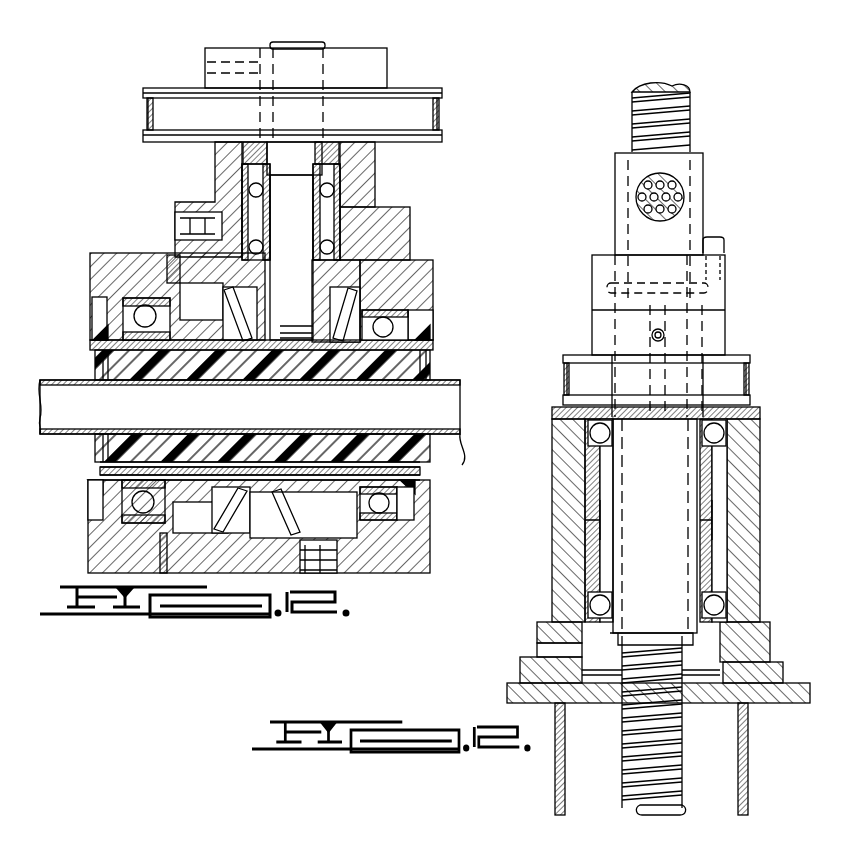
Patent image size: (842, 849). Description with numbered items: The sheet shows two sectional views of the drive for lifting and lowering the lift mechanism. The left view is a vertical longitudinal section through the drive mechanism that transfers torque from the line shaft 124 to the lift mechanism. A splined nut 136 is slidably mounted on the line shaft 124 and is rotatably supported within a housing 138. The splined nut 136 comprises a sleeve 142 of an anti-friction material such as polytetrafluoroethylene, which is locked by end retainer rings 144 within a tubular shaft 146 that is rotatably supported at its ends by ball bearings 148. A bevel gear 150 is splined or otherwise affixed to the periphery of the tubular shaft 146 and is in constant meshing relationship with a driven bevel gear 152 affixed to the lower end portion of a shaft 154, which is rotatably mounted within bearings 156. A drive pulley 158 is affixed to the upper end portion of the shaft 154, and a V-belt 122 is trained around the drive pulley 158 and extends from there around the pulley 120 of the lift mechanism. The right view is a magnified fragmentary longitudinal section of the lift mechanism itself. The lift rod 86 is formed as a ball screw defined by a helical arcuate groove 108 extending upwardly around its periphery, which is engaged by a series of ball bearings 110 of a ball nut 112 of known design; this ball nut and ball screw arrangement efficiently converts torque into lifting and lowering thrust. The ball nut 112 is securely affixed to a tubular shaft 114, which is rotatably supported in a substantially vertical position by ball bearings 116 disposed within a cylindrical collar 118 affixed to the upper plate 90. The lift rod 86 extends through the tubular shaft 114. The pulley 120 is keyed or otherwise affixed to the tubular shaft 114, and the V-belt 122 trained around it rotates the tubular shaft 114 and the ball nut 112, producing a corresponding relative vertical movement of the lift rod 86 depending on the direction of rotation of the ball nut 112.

In FIG. 6, the lift rod 86 is at (650, 810).
In FIG. 6, the upper plate 90 is at (522, 690).
In FIG. 6, the helical arcuate groove 108 is at (620, 783).
In FIG. 6, the ball bearings 110 is at (682, 195).
In FIG. 6, the ball nut 112 is at (706, 208).
In FIG. 6, the tubular shaft 114 is at (662, 508).
In FIG. 6, the ball bearings 116 is at (552, 457).
In FIG. 6, the cylindrical collar 118 is at (753, 528).
In FIG. 6, the pulley 120 is at (743, 355).
In FIG. 5, the V-belt 122 is at (440, 117).
In FIG. 6, the V-belt 122 is at (750, 383).
In FIG. 5, the line shaft 124 is at (456, 404).
In FIG. 5, the splined nut 136 is at (437, 372).
In FIG. 5, the housing 138 is at (410, 548).
In FIG. 5, the sleeve 142 is at (407, 458).
In FIG. 5, the end retainer rings 144 is at (433, 353).
In FIG. 5, the tubular shaft 146 is at (420, 327).
In FIG. 5, the ball bearings 148 is at (420, 290).
In FIG. 5, the bevel gear 150 is at (213, 310).
In FIG. 5, the driven bevel gear 152 is at (385, 236).
In FIG. 5, the shaft 154 is at (300, 215).
In FIG. 5, the bearings 156 is at (340, 200).
In FIG. 5, the drive pulley 158 is at (417, 93).